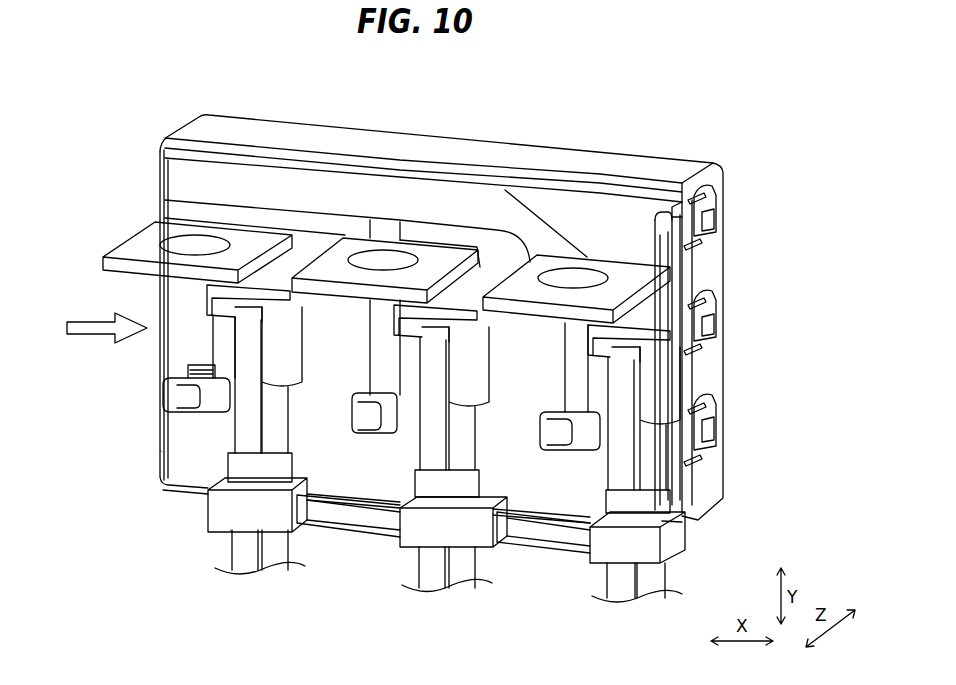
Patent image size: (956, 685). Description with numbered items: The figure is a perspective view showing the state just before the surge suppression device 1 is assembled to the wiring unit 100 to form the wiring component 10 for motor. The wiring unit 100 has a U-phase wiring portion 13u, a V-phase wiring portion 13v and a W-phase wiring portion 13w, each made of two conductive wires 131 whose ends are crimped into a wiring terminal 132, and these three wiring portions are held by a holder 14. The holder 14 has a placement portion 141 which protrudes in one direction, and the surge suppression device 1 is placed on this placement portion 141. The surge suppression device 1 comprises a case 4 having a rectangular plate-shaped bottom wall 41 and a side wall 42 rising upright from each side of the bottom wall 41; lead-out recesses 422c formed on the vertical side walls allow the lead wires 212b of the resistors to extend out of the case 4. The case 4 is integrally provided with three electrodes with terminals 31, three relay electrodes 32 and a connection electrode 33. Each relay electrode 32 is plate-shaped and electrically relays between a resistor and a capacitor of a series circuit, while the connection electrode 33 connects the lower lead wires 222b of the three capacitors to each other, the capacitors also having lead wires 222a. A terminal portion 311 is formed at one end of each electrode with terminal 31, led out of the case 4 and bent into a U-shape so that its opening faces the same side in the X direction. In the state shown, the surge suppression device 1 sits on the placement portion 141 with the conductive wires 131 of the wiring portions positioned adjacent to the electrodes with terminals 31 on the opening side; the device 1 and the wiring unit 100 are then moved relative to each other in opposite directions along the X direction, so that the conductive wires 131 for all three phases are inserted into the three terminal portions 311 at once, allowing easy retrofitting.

The surge suppression device 1 is at (446, 359).
The case 4 is at (441, 303).
The bottom wall 41 is at (585, 210).
The side wall 42 is at (322, 135).
The lead-out recess 422c is at (718, 228).
The electrode with terminal 31 is at (437, 200).
The terminal portion 311 is at (188, 406).
The relay electrode 32 is at (715, 202).
The connection electrode 33 is at (683, 283).
The wiring terminal 132 is at (130, 248).
The conductive wire 131 is at (270, 418).
The U-phase wiring portion 13u is at (273, 469).
The V-phase wiring portion 13v is at (402, 582).
The W-phase wiring portion 13w is at (596, 590).
The holder 14 is at (482, 532).
The placement portion 141 is at (355, 512).
The lead wire 222a is at (718, 413).
The lower lead wire 222b is at (700, 462).
The lead wire 212b is at (715, 440).
The wiring component for motor 10 is at (82, 514).
The wiring unit 100 is at (204, 559).